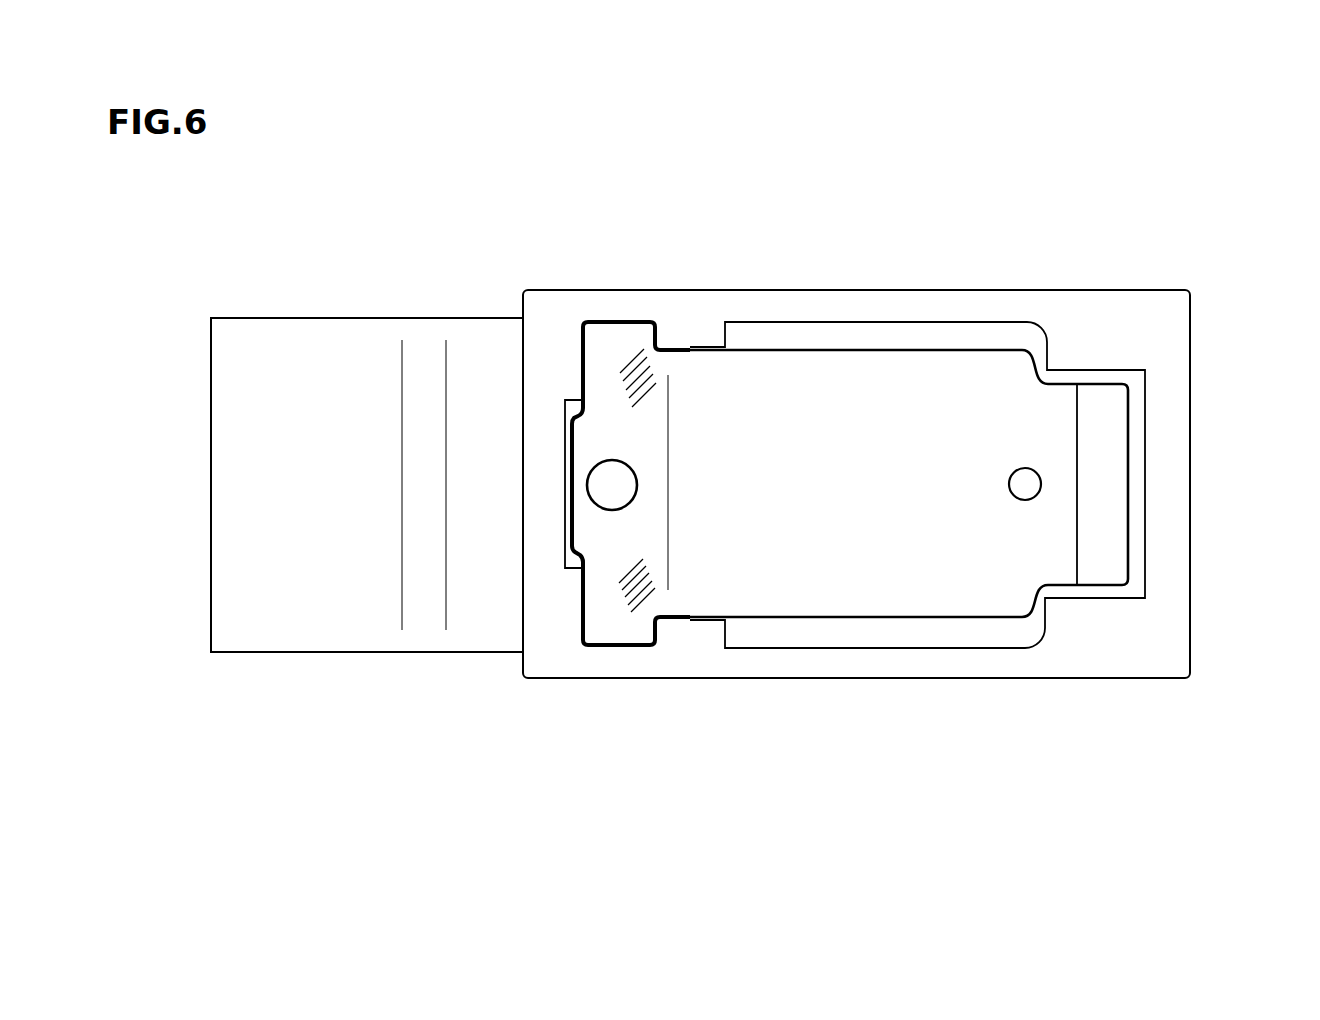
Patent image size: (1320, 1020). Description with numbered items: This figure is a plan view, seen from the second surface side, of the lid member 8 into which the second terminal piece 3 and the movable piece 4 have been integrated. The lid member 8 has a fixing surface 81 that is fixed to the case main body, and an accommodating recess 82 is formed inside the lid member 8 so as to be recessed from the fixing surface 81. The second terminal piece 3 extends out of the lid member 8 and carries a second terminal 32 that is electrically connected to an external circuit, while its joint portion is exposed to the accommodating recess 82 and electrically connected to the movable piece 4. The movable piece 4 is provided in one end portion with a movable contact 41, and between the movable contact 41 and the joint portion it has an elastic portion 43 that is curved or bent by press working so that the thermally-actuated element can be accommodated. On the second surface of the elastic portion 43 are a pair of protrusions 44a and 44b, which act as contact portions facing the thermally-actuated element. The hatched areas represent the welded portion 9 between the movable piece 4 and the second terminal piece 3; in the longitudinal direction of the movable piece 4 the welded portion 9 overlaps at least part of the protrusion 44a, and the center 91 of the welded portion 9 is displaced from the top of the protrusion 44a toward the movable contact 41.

The second terminal piece 3 is at (267, 545).
The second terminal 32 is at (303, 370).
The movable piece 4 is at (853, 405).
The movable contact 41 is at (1103, 479).
The elastic portion 43 is at (873, 562).
The protrusion 44a is at (612, 484).
The protrusion 44b is at (1027, 473).
The lid member 8 is at (1192, 627).
The fixing surface 81 is at (1085, 648).
The accommodating recess 82 is at (797, 632).
The welded portion 9 is at (632, 367).
The center of the welded portion 91 is at (638, 380).